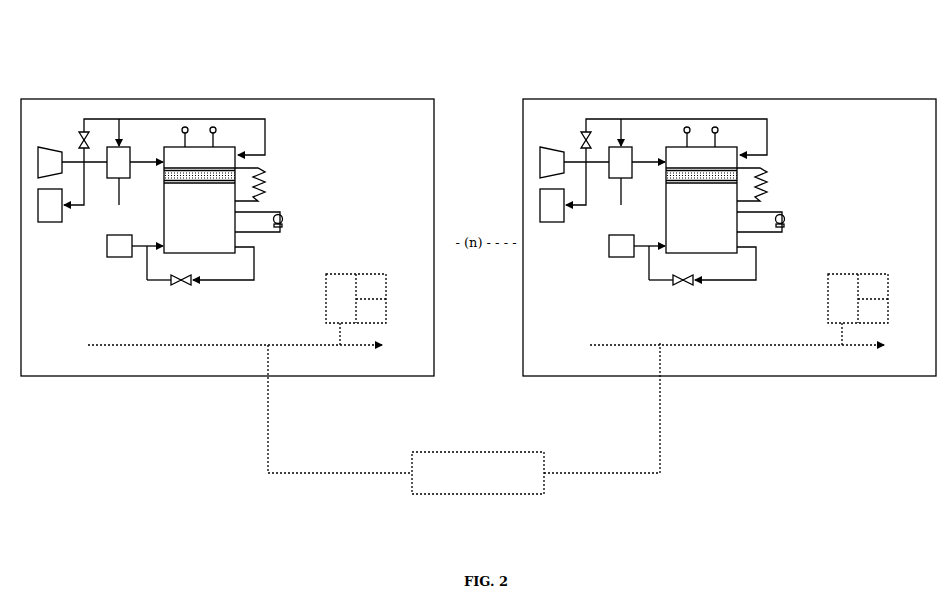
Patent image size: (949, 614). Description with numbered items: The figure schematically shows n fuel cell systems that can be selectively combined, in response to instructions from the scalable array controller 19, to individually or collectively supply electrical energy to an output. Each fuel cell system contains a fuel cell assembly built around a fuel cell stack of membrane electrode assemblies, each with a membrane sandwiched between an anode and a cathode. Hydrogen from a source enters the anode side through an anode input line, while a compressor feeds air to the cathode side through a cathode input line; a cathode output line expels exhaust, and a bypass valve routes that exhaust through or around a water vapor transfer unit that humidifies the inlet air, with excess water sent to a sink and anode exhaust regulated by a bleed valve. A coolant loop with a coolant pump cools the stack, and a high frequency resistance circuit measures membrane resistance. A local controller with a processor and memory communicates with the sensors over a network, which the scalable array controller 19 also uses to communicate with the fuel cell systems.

The scalable array controller 19 is at (471, 480).